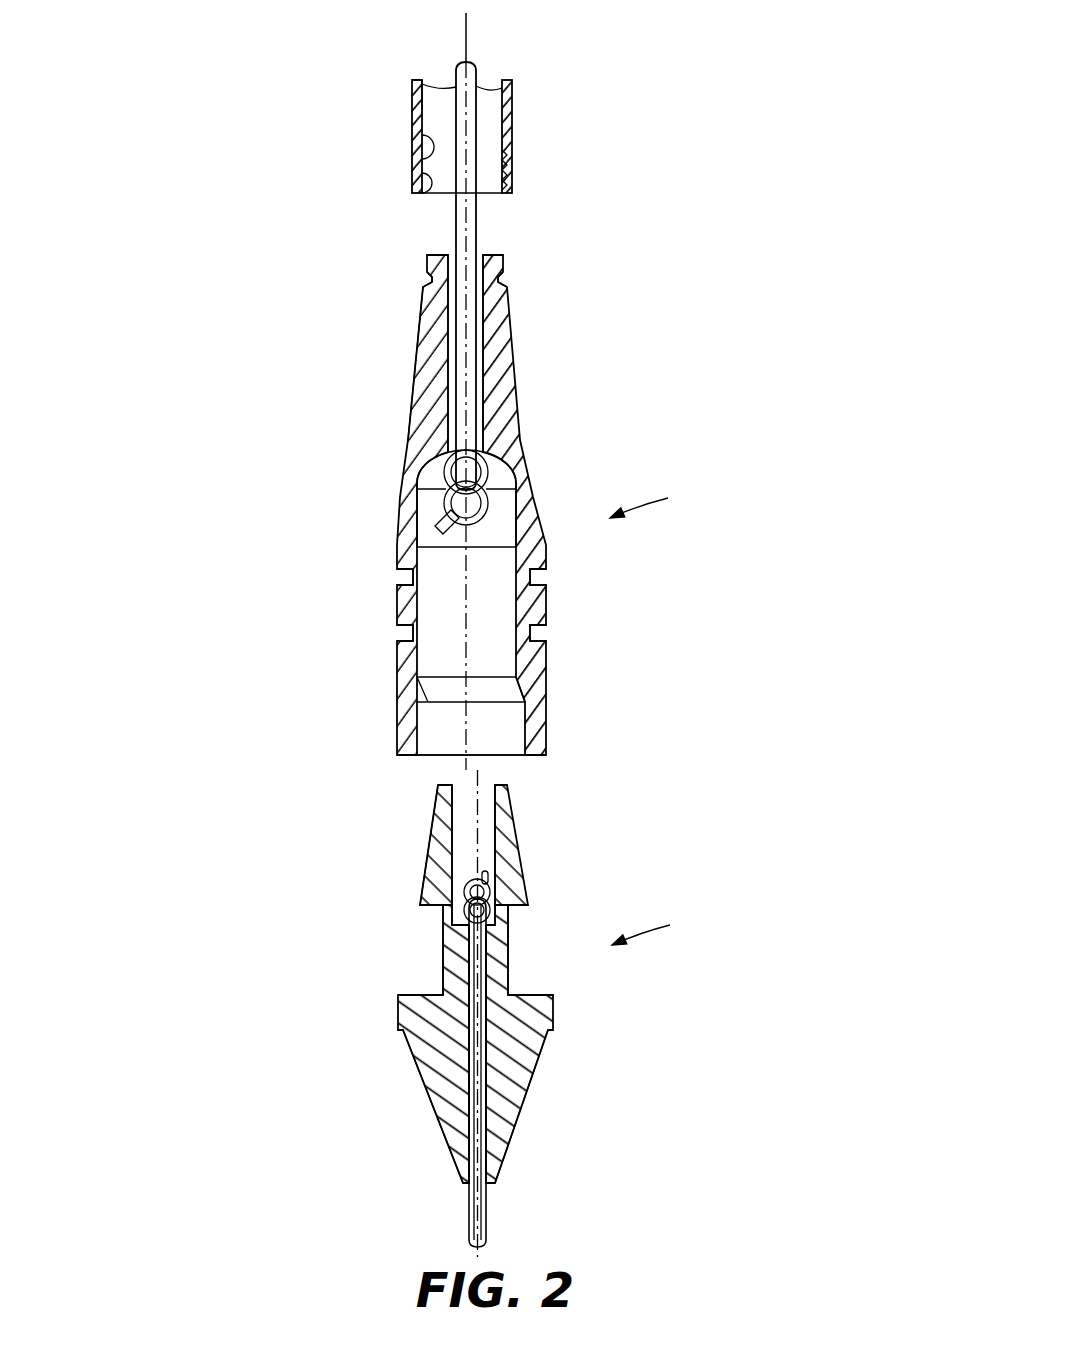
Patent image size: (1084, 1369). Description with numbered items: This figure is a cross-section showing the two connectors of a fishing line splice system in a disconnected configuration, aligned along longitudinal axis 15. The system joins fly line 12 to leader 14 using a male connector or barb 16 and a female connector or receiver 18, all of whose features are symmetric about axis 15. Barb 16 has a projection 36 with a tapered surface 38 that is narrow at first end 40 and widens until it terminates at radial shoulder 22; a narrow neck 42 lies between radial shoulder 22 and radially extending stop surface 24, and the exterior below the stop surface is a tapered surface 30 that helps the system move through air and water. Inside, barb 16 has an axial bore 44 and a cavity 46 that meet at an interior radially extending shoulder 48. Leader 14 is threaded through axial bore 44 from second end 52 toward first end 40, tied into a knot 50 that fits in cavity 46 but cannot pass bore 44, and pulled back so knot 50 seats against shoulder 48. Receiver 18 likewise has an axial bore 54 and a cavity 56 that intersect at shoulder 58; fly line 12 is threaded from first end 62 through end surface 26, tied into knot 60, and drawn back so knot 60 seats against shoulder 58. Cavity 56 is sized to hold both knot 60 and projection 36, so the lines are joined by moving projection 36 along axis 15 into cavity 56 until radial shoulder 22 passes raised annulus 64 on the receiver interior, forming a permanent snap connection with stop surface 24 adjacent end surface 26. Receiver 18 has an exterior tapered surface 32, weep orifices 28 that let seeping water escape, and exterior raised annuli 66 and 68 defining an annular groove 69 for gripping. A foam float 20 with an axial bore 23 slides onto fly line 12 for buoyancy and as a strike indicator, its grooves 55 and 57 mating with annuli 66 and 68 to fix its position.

The fly line 12 is at (456, 236).
The leader 14 is at (470, 1216).
The longitudinal axis 15 is at (467, 28).
The barb 16 is at (654, 921).
The receiver 18 is at (653, 496).
The float 20 is at (514, 109).
The radial shoulder 22 is at (522, 908).
The axial bore 23 is at (432, 103).
The stop surface 24 is at (530, 995).
The end surface 26 is at (405, 755).
The weep orifices 28 is at (406, 577).
The tapered surface 30 is at (531, 1100).
The tapered surface 32 is at (517, 365).
The projection 36 is at (436, 868).
The tapered surface 38 is at (517, 838).
The first end 40 is at (503, 786).
The neck 42 is at (443, 965).
The axial bore 44 is at (468, 1080).
The cavity 46 is at (462, 817).
The interior shoulder 48 is at (502, 932).
The knot 50 is at (460, 900).
The second end 52 is at (496, 1185).
The axial bore 54 is at (454, 390).
The groove 55 is at (421, 140).
The cavity 56 is at (428, 512).
The groove 57 is at (421, 196).
The shoulder 58 is at (438, 466).
The knot 60 is at (484, 473).
The first end 62 is at (492, 255).
The raised annulus 64 is at (521, 683).
The raised annulus 66 is at (426, 279).
The raised annulus 68 is at (422, 300).
The annular groove 69 is at (505, 282).